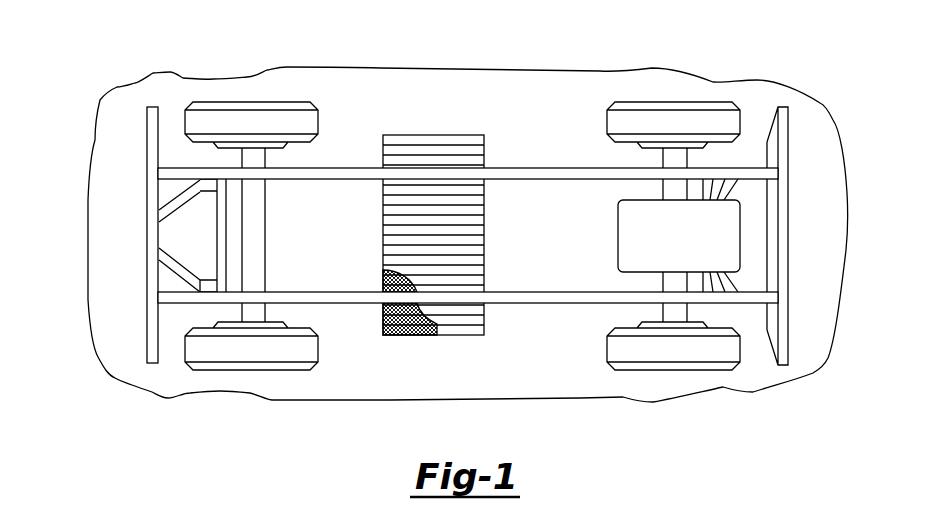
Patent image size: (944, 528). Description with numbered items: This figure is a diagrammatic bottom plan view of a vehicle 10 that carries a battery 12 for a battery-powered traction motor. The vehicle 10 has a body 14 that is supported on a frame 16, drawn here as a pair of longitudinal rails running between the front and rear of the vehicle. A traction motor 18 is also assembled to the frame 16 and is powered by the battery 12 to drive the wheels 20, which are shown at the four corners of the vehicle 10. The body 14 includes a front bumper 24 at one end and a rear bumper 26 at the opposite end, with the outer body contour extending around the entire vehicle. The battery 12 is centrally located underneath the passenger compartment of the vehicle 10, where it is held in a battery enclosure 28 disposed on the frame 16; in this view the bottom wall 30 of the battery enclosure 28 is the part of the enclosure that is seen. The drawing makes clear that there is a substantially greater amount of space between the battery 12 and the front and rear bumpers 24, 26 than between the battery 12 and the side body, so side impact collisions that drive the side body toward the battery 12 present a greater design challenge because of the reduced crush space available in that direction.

The vehicle 10 is at (100, 56).
The battery 12 is at (405, 340).
The body 14 is at (549, 66).
The frame 16 is at (543, 168).
The traction motor 18 is at (633, 236).
The wheels 20 is at (303, 121).
The front bumper 24 is at (778, 228).
The rear bumper 26 is at (153, 233).
The battery enclosure 28 is at (374, 222).
The bottom wall 30 is at (445, 252).